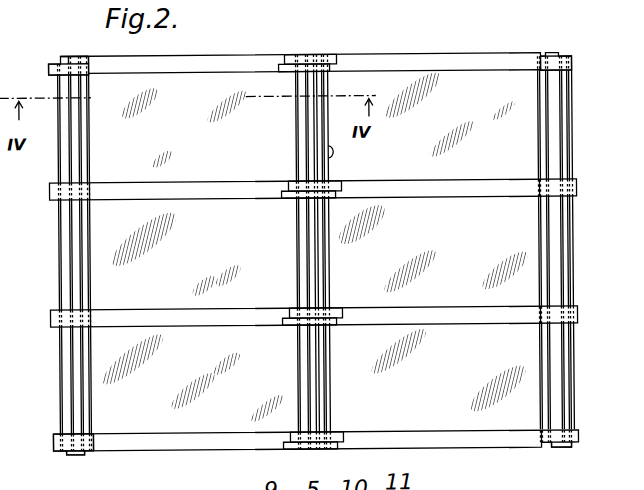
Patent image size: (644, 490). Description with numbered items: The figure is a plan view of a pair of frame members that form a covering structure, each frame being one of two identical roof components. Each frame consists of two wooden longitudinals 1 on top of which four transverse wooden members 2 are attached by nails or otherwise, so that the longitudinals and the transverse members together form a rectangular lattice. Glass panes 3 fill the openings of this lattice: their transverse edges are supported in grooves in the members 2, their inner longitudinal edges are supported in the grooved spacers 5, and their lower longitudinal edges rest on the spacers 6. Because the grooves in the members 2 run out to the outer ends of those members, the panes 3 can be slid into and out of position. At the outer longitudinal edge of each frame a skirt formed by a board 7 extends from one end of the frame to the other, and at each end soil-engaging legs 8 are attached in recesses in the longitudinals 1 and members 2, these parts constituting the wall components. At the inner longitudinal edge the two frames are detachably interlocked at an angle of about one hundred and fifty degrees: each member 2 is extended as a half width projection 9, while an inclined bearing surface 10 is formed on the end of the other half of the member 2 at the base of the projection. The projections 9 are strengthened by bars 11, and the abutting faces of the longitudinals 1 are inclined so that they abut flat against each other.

The wooden longitudinal 1 is at (89, 107).
The transverse wooden member 2 is at (187, 72).
The glass pane 3 is at (314, 245).
The grooved spacer 5 is at (327, 83).
The spacer 6 is at (91, 87).
The board 7 is at (50, 66).
The soil-engaging leg 8 is at (73, 62).
The half width projection 9 is at (333, 54).
The inclined bearing surface 10 is at (301, 335).
The bar 11 is at (289, 310).